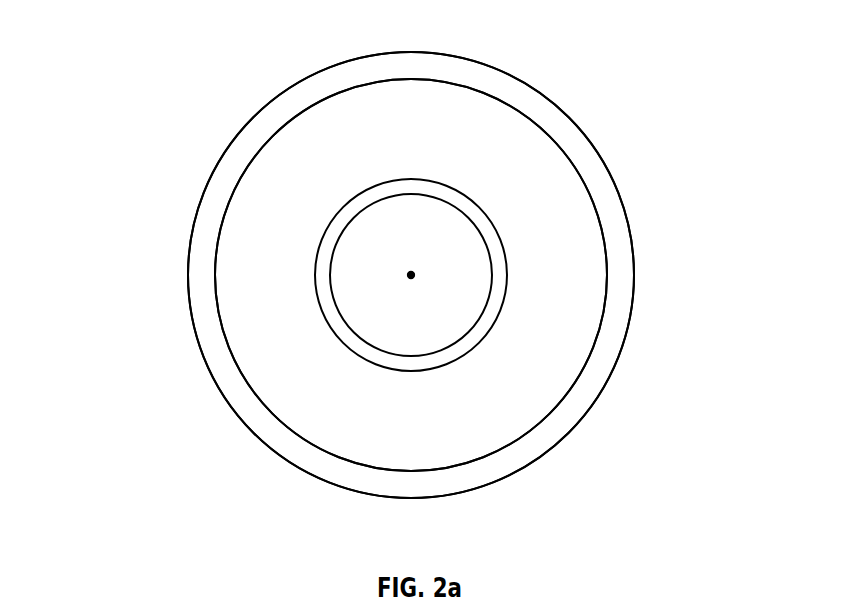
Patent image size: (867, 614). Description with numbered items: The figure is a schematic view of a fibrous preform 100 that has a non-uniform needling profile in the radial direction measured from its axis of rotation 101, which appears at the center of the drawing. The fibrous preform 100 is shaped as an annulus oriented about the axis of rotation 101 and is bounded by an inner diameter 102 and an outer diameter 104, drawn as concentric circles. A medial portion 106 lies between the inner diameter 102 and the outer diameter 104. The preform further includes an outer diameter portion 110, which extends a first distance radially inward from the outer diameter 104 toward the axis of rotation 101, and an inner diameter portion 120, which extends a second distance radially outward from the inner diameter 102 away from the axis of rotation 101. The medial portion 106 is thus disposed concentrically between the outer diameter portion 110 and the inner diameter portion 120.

The fibrous preform 100 is at (167, 99).
The axis of rotation 101 is at (411, 275).
The inner diameter 102 is at (478, 235).
The outer diameter 104 is at (413, 497).
The medial portion 106 is at (360, 388).
The outer diameter portion 110 is at (470, 475).
The inner diameter portion 120 is at (467, 343).